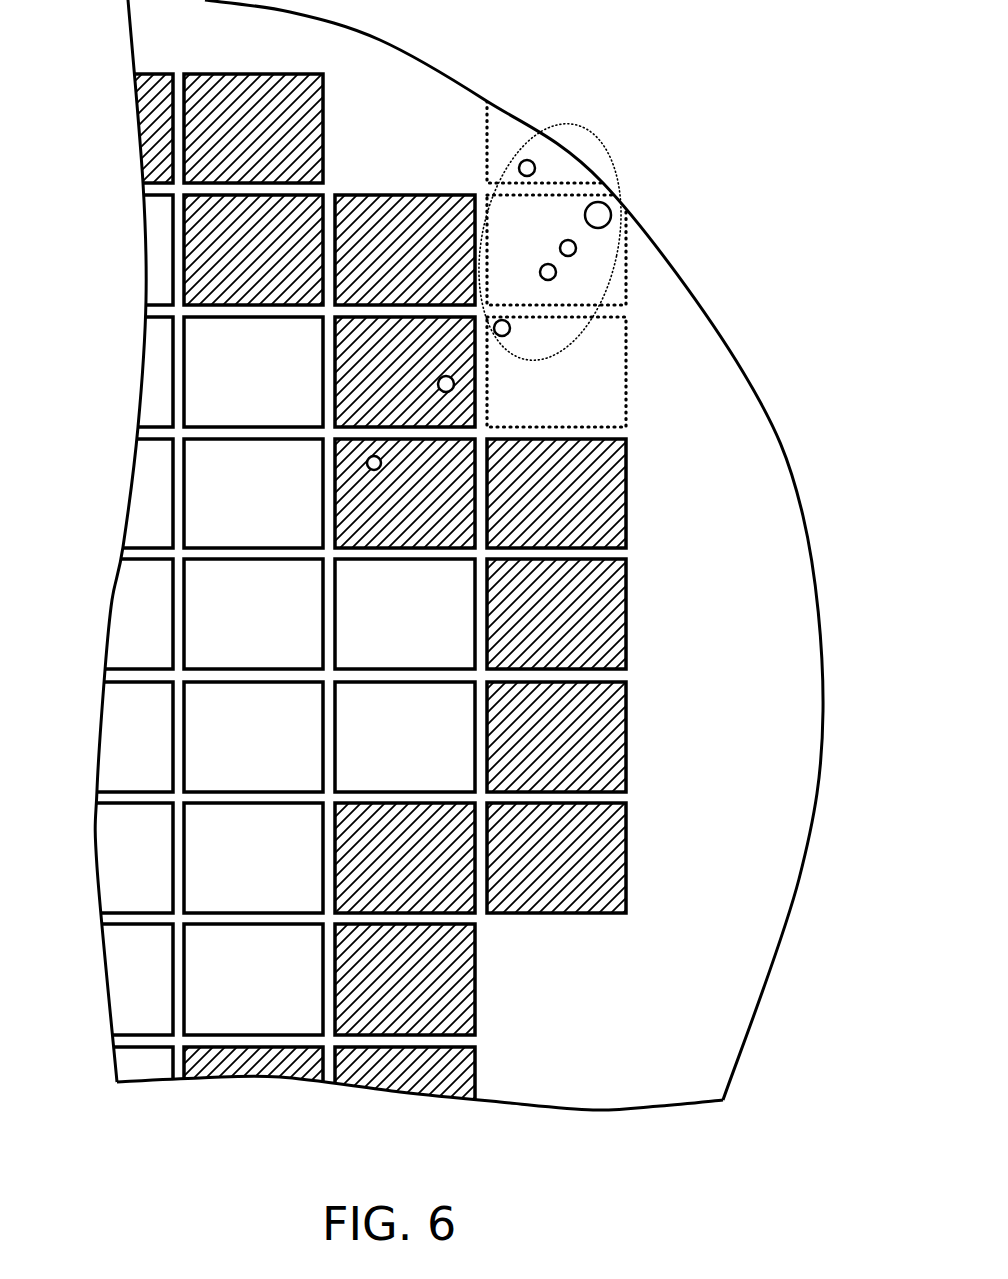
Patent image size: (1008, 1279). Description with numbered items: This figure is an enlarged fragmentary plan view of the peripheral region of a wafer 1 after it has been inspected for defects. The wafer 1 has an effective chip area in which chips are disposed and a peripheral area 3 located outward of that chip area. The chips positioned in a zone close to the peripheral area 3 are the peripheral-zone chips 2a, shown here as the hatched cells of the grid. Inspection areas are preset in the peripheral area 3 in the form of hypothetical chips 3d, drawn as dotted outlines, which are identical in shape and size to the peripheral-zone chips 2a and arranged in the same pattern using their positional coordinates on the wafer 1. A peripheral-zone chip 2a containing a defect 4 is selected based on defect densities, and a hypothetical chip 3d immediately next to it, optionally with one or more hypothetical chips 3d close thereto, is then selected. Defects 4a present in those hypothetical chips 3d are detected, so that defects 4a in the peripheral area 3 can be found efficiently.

The wafer 1 is at (742, 141).
The peripheral-zone chip 2a is at (597, 613).
The peripheral area 3 is at (150, 25).
The hypothetical chip 3d is at (627, 370).
The defect 4 is at (438, 384).
The defect 4a is at (587, 128).